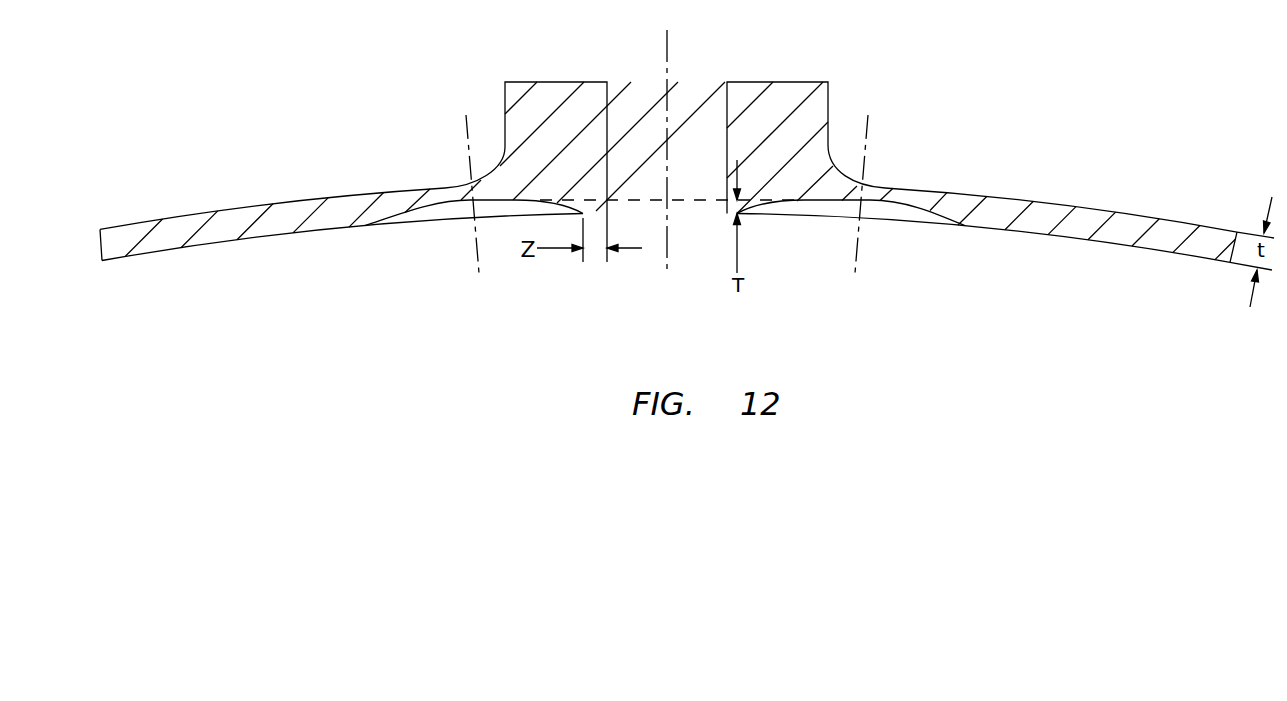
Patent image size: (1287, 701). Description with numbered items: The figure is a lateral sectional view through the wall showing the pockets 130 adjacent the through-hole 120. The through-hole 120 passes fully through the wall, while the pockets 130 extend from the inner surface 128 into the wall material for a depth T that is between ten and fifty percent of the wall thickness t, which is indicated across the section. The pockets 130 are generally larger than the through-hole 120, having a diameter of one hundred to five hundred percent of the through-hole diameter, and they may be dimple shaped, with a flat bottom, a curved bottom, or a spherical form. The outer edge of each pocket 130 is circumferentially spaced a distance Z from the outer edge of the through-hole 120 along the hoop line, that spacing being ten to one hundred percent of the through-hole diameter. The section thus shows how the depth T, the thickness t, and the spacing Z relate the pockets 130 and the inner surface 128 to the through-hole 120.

The through-hole 120 is at (607, 128).
The inner surface 128 is at (1075, 238).
The pockets 130 is at (872, 205).